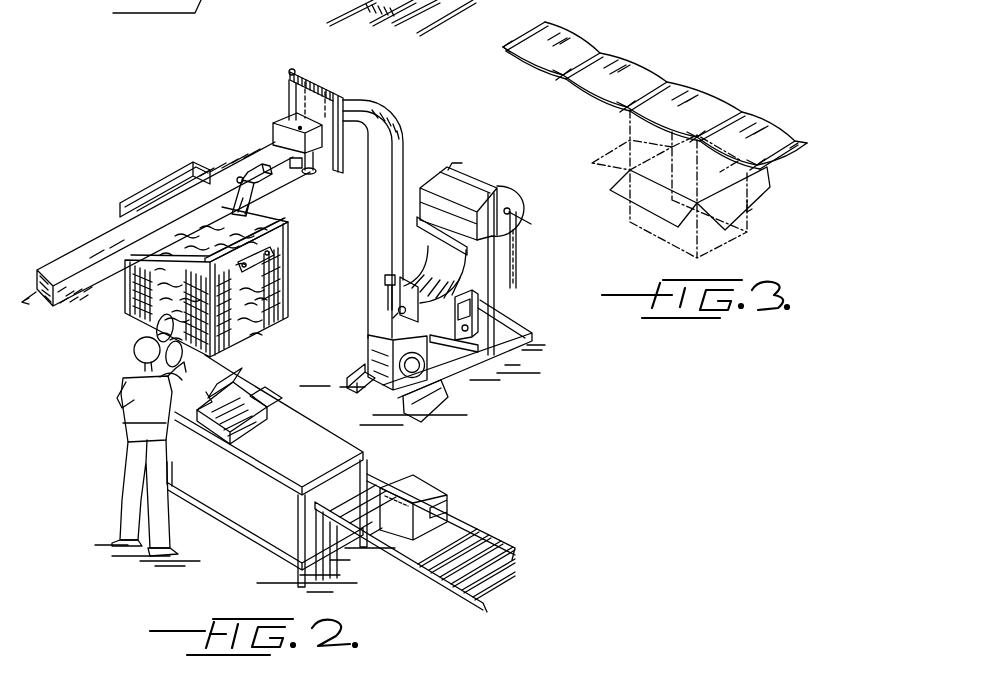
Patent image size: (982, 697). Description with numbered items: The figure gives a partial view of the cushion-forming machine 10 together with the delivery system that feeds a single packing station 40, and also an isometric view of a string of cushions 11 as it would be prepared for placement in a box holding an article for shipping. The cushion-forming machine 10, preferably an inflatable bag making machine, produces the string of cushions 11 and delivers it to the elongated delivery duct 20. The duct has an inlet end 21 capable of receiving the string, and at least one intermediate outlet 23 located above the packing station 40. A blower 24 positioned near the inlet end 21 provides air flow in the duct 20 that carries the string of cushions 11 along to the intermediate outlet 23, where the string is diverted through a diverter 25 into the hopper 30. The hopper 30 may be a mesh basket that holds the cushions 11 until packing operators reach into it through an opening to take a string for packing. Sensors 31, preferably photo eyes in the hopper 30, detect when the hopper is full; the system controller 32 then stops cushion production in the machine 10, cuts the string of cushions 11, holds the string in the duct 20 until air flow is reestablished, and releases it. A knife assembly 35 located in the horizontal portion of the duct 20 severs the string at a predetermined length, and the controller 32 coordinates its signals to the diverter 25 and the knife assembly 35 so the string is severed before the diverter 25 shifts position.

In FIG. 2, the cushion-forming machine 10 is at (457, 282).
In FIG. 3, the string of cushions 11 is at (703, 97).
In FIG. 2, the elongated delivery duct 20 is at (100, 232).
In FIG. 2, the inlet end 21 is at (406, 312).
In FIG. 2, the intermediate outlet 23 is at (272, 240).
In FIG. 2, the blower 24 is at (408, 380).
In FIG. 2, the diverter 25 is at (264, 180).
In FIG. 2, the hopper 30 is at (244, 322).
In FIG. 2, the sensors 31 is at (280, 270).
In FIG. 2, the system controller 32 is at (468, 320).
In FIG. 2, the knife assembly 35 is at (292, 85).
In FIG. 2, the packing station 40 is at (120, 356).